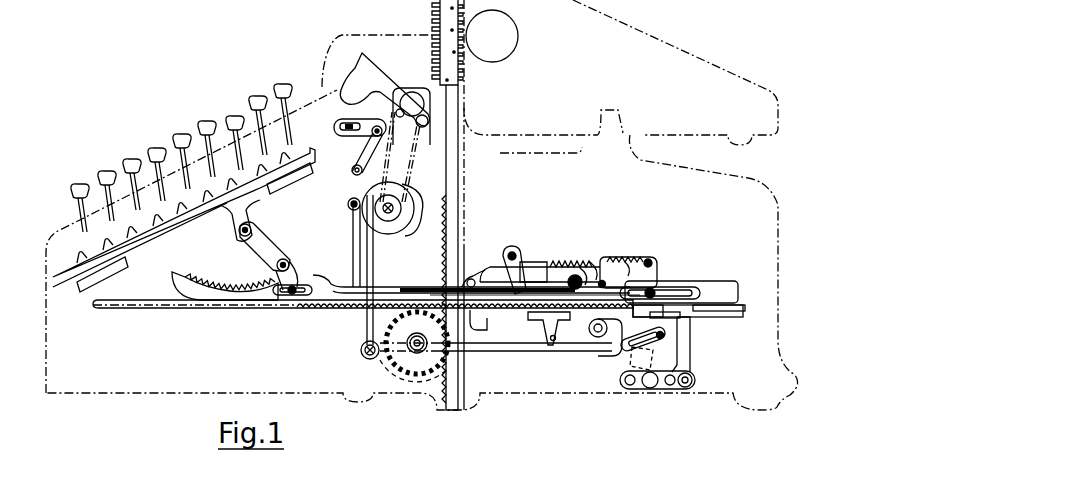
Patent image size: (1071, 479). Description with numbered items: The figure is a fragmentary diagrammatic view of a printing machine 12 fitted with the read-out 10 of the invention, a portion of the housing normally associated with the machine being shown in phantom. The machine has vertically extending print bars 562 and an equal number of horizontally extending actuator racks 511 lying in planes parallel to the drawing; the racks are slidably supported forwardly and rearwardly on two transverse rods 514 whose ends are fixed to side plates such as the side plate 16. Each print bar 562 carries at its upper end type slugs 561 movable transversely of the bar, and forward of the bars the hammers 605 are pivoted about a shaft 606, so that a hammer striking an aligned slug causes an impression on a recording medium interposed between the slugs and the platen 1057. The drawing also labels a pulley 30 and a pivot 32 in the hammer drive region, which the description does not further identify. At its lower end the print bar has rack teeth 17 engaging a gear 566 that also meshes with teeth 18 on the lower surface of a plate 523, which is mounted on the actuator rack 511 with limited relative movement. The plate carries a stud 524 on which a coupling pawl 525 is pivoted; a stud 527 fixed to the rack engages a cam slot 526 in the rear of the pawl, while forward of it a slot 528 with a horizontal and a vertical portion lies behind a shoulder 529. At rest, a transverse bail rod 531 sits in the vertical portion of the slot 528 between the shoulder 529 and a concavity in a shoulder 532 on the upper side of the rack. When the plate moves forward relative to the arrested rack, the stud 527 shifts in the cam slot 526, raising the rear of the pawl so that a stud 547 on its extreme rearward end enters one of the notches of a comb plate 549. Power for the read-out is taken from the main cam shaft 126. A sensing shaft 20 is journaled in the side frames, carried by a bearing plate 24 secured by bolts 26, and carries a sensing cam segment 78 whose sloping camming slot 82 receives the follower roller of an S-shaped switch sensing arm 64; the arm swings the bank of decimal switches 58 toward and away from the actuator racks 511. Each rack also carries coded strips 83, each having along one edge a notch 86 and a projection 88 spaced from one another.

The read-out 10 is at (704, 351).
The machine 12 is at (184, 106).
The side plate 16 is at (62, 236).
The rack teeth 17 is at (461, 376).
The teeth 18 is at (402, 300).
The sensing shaft 20 is at (650, 389).
The bearing plate 24 is at (633, 388).
The bolts 26 is at (671, 387).
The pulley 30 is at (415, 196).
The pivot 32 is at (354, 211).
The decimal switches 58 is at (688, 338).
The switch sensing arm 64 is at (613, 354).
The sensing cam segment 78 is at (627, 367).
The camming slot 82 is at (668, 347).
The coded strip 83 is at (743, 317).
The notch 86 is at (697, 306).
The projection 88 is at (662, 312).
The main cam shaft 126 is at (408, 225).
The actuator rack 511 is at (345, 287).
The rods 514 is at (293, 296).
The plate 523 is at (472, 320).
The stud 524 is at (462, 286).
The coupling pawl 525 is at (490, 262).
The cam slot 526 is at (657, 267).
The stud 527 is at (603, 279).
The slot 528 is at (592, 268).
The shoulder 529 is at (567, 266).
The bail rod 531 is at (584, 266).
The shoulder 532 is at (570, 290).
The stud 547 is at (632, 266).
The comb plate 549 is at (533, 252).
The type slugs 561 is at (440, 17).
The print bar 562 is at (462, 189).
The gear 566 is at (403, 361).
The hammer 605 is at (352, 100).
The shaft 606 is at (422, 96).
The platen 1057 is at (519, 37).